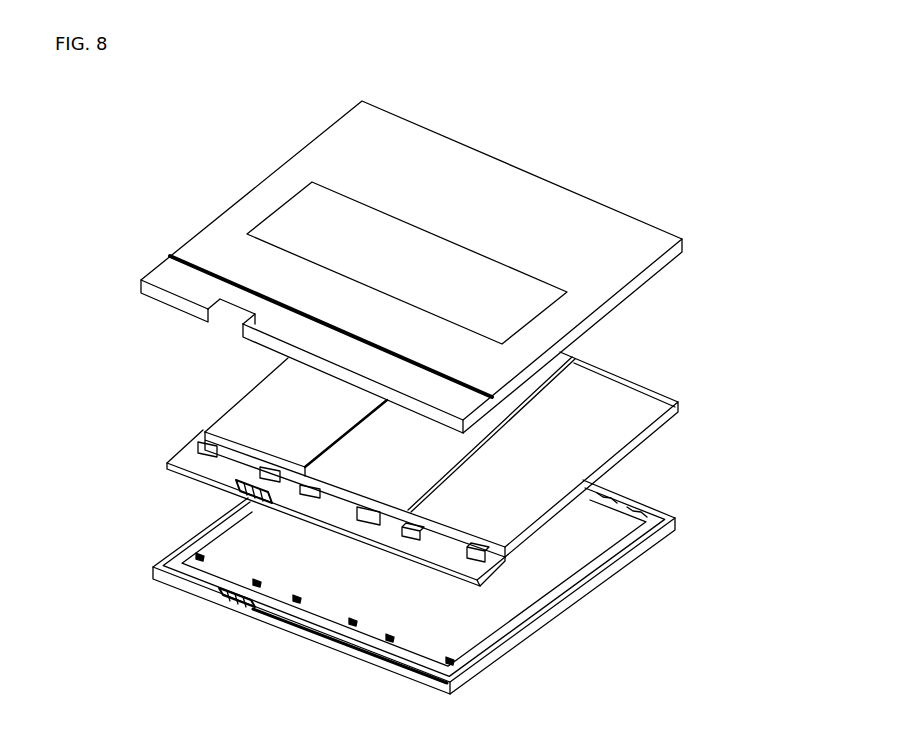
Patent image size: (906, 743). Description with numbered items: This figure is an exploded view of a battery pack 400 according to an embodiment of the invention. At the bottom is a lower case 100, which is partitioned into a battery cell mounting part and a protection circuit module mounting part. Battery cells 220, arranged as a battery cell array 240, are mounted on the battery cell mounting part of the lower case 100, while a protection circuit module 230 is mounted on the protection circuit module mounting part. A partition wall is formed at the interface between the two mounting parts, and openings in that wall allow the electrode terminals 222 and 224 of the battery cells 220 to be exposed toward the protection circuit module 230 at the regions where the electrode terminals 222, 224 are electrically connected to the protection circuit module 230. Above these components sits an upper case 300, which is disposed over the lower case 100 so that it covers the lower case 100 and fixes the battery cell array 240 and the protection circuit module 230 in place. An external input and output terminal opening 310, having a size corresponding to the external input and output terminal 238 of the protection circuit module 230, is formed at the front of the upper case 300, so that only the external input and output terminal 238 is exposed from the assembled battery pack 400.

The battery pack 400 is at (216, 109).
The upper case 300 is at (545, 170).
The external input and output terminal opening 310 is at (232, 318).
The battery cell array 240 is at (633, 368).
The battery cells 220 is at (645, 405).
The electrode terminal 224 is at (413, 537).
The electrode terminal 222 is at (478, 562).
The protection circuit module 230 is at (158, 438).
The external input and output terminal 238 is at (237, 492).
The lower case 100 is at (645, 493).